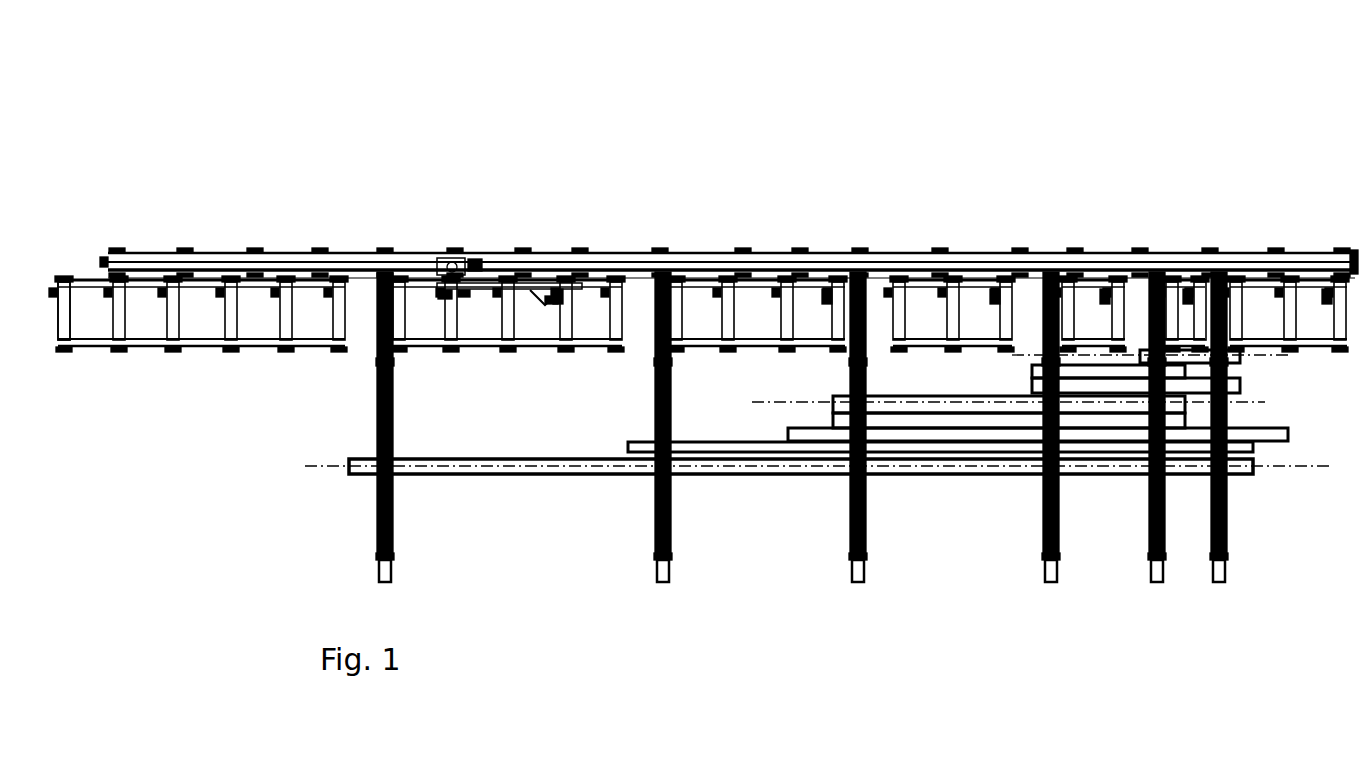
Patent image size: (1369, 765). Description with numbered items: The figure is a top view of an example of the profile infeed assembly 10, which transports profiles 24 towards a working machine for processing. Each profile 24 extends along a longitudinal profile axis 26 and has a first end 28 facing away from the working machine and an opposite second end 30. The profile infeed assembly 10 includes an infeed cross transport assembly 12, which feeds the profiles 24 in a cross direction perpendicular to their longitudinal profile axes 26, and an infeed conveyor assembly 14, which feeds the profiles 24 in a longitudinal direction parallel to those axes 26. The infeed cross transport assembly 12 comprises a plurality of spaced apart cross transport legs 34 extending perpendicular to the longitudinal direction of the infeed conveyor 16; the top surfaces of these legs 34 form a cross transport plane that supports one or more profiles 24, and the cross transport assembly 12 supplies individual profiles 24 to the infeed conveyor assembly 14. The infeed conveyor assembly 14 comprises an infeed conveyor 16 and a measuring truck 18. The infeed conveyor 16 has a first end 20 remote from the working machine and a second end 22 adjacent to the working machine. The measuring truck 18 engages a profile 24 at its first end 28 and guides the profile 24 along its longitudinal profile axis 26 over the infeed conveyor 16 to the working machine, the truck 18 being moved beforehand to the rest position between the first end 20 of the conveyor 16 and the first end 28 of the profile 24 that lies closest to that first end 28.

The profile infeed assembly 10 is at (305, 142).
The infeed cross transport assembly 12 is at (297, 433).
The infeed conveyor assembly 14 is at (178, 378).
The infeed conveyor 16 is at (728, 307).
The measuring truck 18 is at (497, 280).
The first end of the infeed conveyor 20 is at (70, 285).
The second end of the infeed conveyor 22 is at (1343, 332).
The profile 24 is at (567, 470).
The longitudinal profile axis 26 is at (464, 471).
The first end of the profile 28 is at (1078, 262).
The second end of the profile 30 is at (1247, 330).
The cross transport leg 34 is at (378, 512).